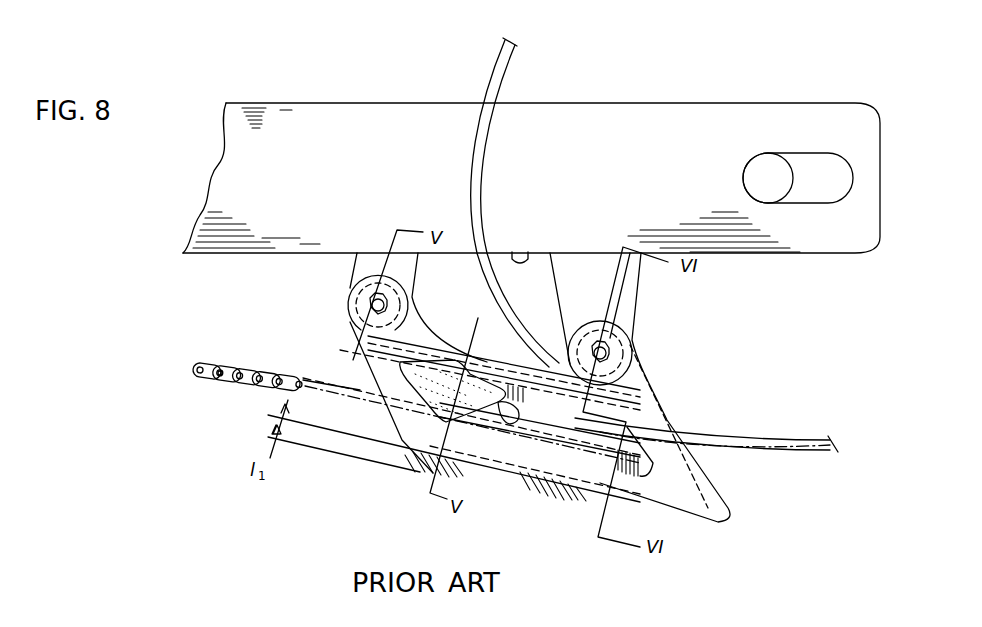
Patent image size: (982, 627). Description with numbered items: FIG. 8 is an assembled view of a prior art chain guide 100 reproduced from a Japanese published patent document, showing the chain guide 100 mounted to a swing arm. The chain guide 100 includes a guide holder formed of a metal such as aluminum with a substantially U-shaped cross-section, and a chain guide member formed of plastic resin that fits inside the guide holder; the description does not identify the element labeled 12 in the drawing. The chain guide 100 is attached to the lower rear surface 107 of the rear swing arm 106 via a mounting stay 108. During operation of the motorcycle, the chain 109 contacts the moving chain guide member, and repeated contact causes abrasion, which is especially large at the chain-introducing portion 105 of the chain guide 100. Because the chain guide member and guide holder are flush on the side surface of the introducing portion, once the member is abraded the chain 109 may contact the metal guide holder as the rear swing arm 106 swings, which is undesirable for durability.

The rear swing arm 106 is at (390, 137).
The lower rear surface 107 is at (519, 252).
The mounting stay 108 is at (352, 268).
The chain guide 100 is at (328, 331).
The chain-introducing portion 105 is at (357, 365).
The chain 109 is at (226, 388).
The guide pad 12 is at (463, 395).